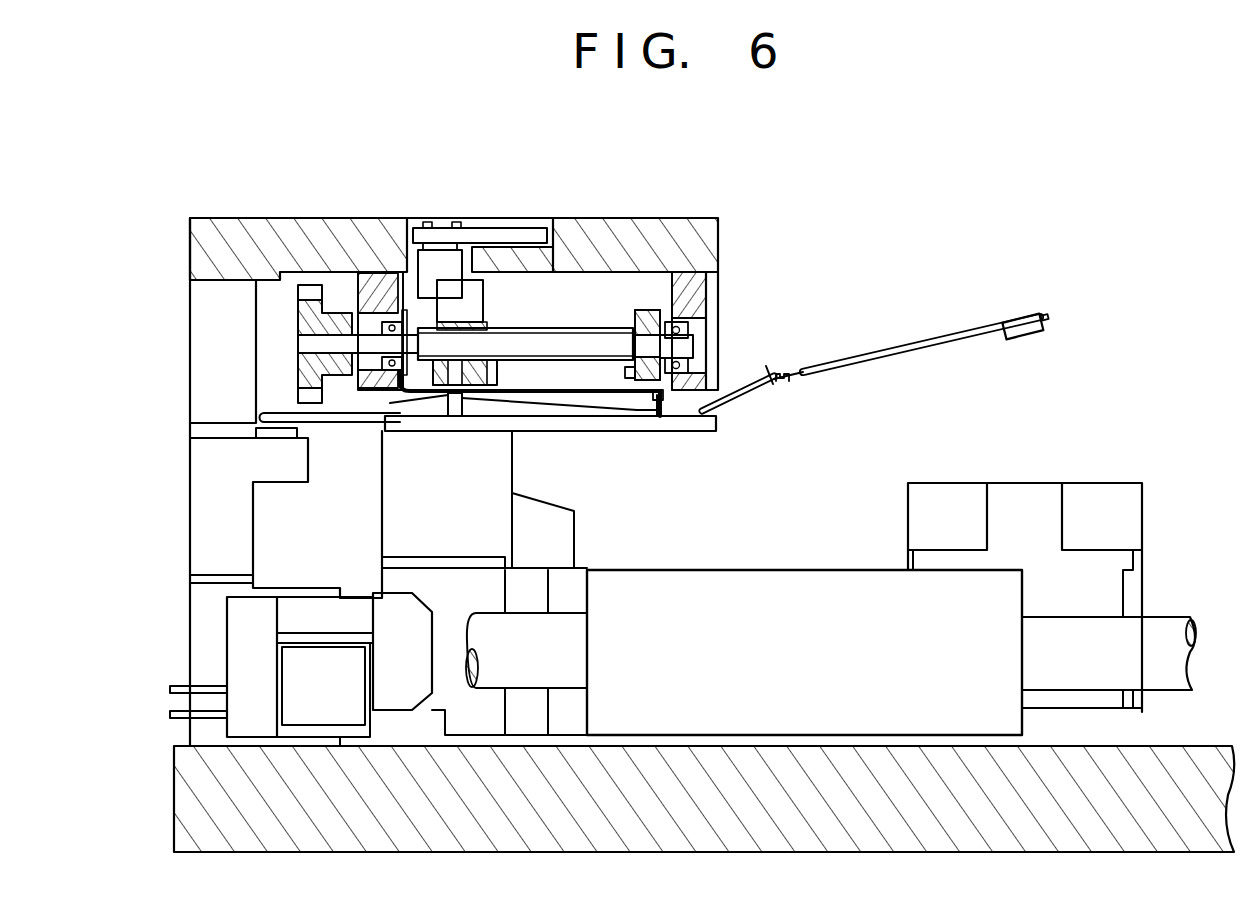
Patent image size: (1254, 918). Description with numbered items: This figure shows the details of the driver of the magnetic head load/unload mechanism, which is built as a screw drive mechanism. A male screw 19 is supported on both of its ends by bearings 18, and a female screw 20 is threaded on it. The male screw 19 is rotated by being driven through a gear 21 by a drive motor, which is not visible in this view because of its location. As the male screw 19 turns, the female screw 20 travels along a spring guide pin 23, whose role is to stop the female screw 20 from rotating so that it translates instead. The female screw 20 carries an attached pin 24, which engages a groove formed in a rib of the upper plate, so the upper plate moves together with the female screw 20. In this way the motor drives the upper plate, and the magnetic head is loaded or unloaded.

The bearings 18 is at (393, 320).
The male screw 19 is at (585, 345).
The female screw 20 is at (497, 307).
The gear 21 is at (307, 287).
The spring guide pin 23 is at (652, 408).
The pin 24 is at (503, 417).